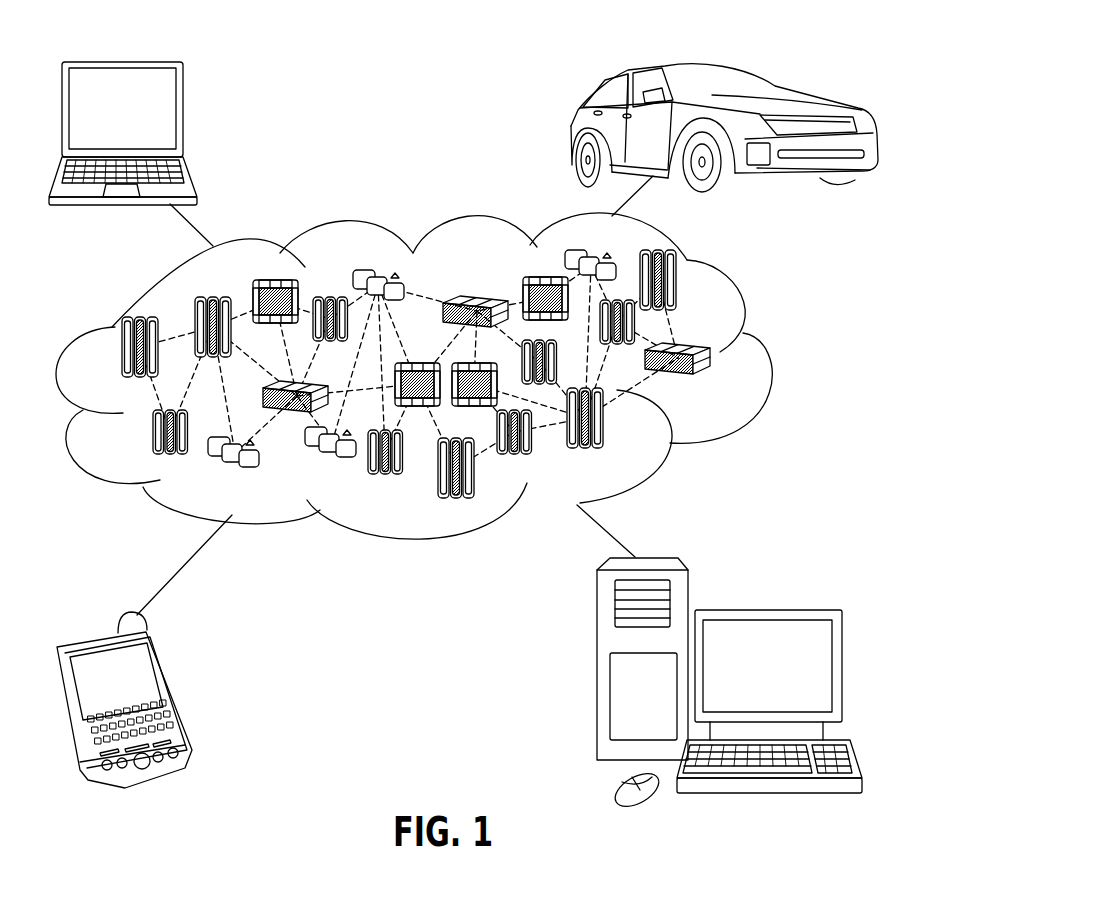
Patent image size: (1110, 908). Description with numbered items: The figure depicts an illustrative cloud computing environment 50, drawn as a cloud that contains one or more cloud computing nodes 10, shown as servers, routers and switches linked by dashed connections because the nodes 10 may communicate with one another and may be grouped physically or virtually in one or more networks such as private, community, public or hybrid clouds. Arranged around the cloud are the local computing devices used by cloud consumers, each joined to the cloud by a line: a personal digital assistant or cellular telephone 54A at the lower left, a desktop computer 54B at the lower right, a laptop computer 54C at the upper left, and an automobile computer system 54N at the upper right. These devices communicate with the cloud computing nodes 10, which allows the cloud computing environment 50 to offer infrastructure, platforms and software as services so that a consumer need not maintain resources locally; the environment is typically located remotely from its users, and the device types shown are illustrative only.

The cloud computing nodes 10 is at (462, 374).
The cloud computing environment 50 is at (760, 353).
The personal digital assistant or cellular telephone 54A is at (173, 693).
The desktop computer 54B is at (763, 610).
The laptop computer 54C is at (183, 115).
The automobile computer system 54N is at (572, 130).